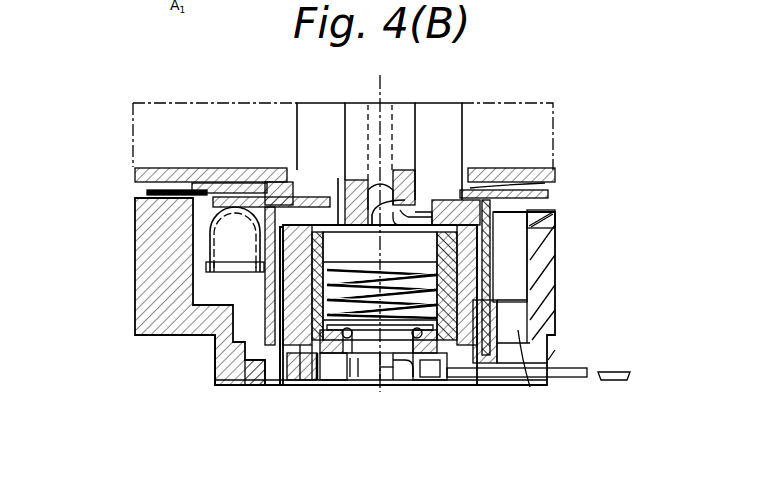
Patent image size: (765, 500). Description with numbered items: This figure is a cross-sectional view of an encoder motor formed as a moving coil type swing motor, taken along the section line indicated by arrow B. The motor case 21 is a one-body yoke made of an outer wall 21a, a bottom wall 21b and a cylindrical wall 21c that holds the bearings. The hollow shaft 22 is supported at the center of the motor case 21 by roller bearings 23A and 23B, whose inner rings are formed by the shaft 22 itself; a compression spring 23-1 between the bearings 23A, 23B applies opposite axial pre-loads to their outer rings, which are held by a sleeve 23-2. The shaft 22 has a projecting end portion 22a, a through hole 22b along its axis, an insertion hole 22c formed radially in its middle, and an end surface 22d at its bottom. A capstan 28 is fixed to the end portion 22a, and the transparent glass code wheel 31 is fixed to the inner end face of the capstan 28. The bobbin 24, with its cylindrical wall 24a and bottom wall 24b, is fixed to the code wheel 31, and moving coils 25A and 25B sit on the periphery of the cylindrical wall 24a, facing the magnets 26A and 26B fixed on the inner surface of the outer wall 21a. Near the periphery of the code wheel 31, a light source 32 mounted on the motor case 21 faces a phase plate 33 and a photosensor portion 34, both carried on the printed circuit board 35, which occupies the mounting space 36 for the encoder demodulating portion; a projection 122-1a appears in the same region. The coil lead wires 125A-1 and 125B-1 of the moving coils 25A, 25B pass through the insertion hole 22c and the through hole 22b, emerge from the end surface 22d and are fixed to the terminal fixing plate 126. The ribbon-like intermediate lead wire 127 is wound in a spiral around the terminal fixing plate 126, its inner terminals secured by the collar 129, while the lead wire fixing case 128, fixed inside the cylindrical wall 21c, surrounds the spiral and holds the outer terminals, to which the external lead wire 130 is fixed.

The space for mounting the encoder demodulating portion 36 is at (173, 118).
The printed circuit board 35 is at (222, 162).
The projection 122-1a is at (290, 193).
The capstan 28 is at (291, 114).
The shaft 22 is at (405, 145).
The end portion 22a is at (407, 195).
The through hole 22b is at (368, 105).
The insertion hole 22c is at (500, 122).
The end surface 22d is at (378, 387).
The photosensor portion 34 is at (218, 163).
The phase plate 33 is at (203, 185).
The code wheel 31 is at (228, 212).
The light source 32 is at (225, 247).
The bobbin 24 is at (555, 190).
The cylindrical wall 24a is at (513, 240).
The bottom wall 24b is at (550, 197).
The magnet 26B is at (555, 228).
The magnet 26A is at (542, 220).
The motor case 21 is at (566, 280).
The outer wall 21a is at (535, 290).
The bottom wall 21b is at (230, 385).
The cylindrical wall 21c is at (513, 303).
The roller bearing 23A is at (369, 253).
The roller bearing 23B is at (290, 385).
The compression spring 23-1 is at (293, 383).
The sleeve 23-2 is at (205, 360).
The moving coil 25A is at (267, 388).
The moving coil 25B is at (522, 382).
The coil lead wire 125A-1 is at (338, 178).
The coil lead wire 125B-1 is at (366, 180).
The terminal fixing plate 126 is at (422, 400).
The intermediate lead wire 127 is at (500, 397).
The lead wire fixing case 128 is at (313, 387).
The collar 129 is at (422, 392).
The external lead wire 130 is at (572, 380).
The section direction arrow B is at (474, 412).